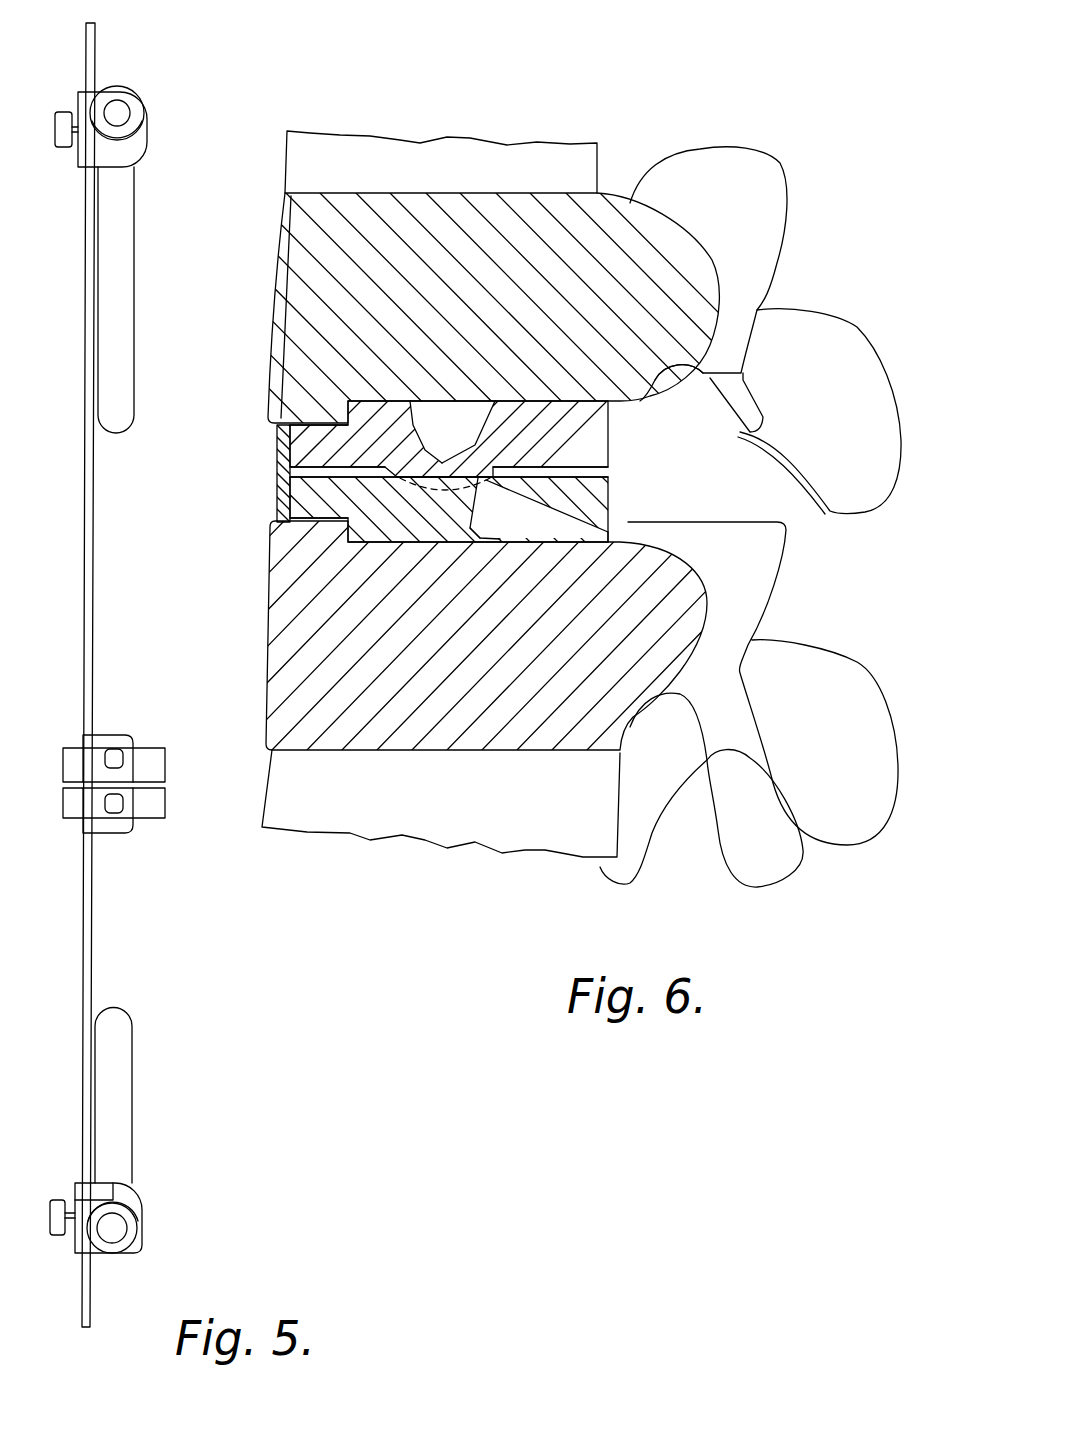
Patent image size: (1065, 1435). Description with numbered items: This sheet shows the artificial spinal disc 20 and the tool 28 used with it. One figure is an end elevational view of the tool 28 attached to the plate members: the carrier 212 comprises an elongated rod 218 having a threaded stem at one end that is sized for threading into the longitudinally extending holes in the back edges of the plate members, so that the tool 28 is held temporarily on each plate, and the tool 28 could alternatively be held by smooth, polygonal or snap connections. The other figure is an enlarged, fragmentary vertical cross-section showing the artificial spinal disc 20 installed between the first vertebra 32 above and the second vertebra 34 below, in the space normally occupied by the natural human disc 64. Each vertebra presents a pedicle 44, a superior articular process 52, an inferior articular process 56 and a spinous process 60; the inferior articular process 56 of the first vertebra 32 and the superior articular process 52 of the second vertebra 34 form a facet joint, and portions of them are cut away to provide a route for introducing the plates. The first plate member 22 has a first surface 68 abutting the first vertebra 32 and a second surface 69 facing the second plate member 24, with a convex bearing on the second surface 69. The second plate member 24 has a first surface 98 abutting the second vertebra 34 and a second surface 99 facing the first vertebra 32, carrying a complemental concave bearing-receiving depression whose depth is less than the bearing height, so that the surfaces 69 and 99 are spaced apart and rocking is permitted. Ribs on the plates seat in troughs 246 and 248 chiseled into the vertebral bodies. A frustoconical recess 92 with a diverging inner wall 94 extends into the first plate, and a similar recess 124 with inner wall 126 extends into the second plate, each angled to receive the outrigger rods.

In FIG. 6, the artificial spinal disc 20 is at (506, 477).
In FIG. 5, the first plate member 22 is at (147, 748).
In FIG. 6, the first plate member 22 is at (405, 314).
In FIG. 5, the second plate member 24 is at (146, 818).
In FIG. 6, the second plate member 24 is at (526, 640).
In FIG. 5, the tool 28 is at (95, 943).
In FIG. 6, the first vertebra 32 is at (284, 262).
In FIG. 6, the second vertebra 34 is at (280, 675).
In FIG. 6, the left pedicle 44 is at (632, 207).
In FIG. 6, the left superior articular process 52 is at (775, 528).
In FIG. 6, the left inferior articular process 56 is at (735, 373).
In FIG. 6, the spinous process 60 is at (860, 330).
In FIG. 6, the natural human disc 64 is at (276, 430).
In FIG. 6, the first surface 68 is at (322, 412).
In FIG. 6, the second surface 69 is at (600, 472).
In FIG. 6, the recess 92 is at (435, 425).
In FIG. 6, the inner wall 94 is at (478, 422).
In FIG. 6, the first surface 98 is at (318, 522).
In FIG. 6, the second surface 99 is at (600, 478).
In FIG. 6, the recess 124 is at (556, 527).
In FIG. 6, the inner wall 126 is at (493, 513).
In FIG. 5, the carrier 212 is at (80, 548).
In FIG. 5, the elongated rod 218 is at (94, 640).
In FIG. 6, the trough 246 is at (637, 392).
In FIG. 6, the trough 248 is at (627, 538).